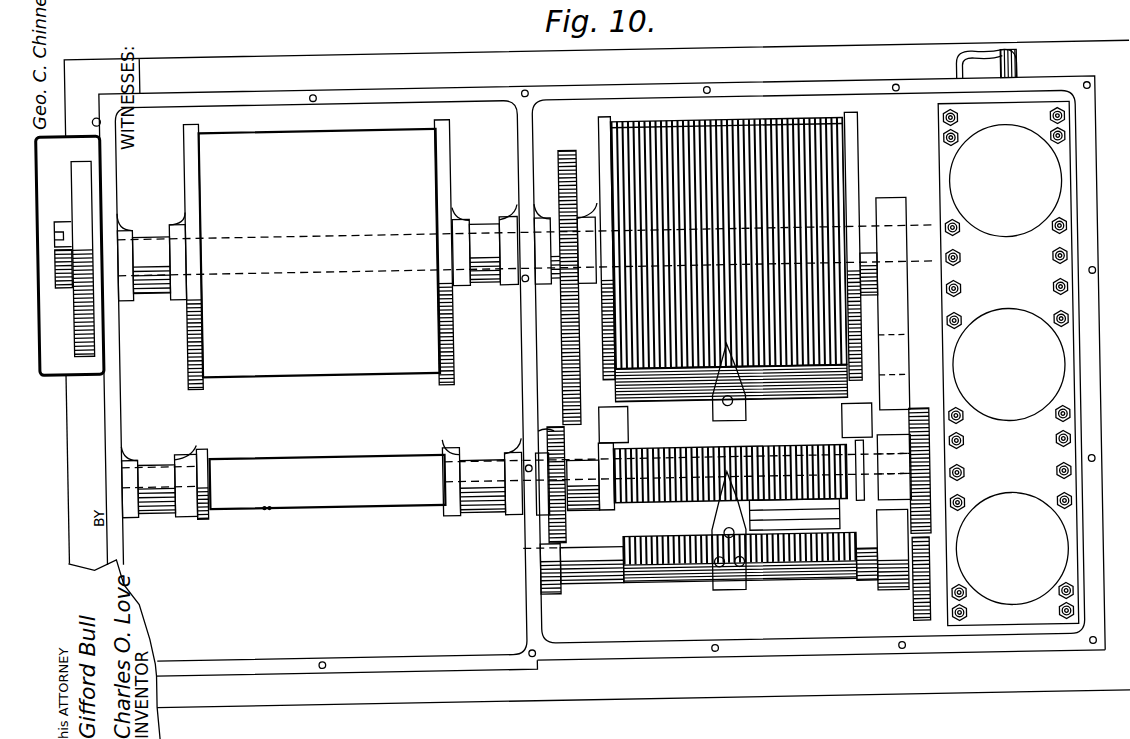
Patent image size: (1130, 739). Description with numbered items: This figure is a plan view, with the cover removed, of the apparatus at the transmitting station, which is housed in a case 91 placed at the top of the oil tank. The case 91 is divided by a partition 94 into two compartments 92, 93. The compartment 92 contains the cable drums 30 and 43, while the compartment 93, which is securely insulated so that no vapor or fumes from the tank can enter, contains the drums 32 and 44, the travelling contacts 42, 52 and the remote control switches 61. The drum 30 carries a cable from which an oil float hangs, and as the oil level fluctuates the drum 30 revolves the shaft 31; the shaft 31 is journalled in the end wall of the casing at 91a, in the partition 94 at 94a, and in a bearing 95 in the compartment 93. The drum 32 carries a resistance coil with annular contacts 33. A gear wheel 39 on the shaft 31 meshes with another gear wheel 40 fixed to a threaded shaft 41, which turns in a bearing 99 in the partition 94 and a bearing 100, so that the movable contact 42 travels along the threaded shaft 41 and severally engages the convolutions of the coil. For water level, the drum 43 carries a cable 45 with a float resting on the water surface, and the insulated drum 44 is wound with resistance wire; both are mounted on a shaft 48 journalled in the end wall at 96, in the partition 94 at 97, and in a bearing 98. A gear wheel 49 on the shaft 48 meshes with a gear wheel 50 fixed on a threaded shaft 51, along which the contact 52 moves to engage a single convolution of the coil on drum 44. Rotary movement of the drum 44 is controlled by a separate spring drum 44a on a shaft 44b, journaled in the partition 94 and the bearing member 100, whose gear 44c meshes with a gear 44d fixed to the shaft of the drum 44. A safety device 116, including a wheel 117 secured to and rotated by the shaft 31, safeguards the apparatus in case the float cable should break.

The drum 30 is at (374, 366).
The shaft 31 is at (256, 371).
The coil 32 is at (765, 123).
The annular contacts 33 is at (616, 122).
The gear wheel 39 is at (577, 152).
The gear wheel 40 is at (604, 425).
The threaded shaft 41 is at (666, 401).
The movable contact 42 is at (740, 396).
The drum 43 is at (374, 501).
The drum 44 is at (790, 512).
The drum 44a is at (758, 578).
The shaft 44b is at (545, 514).
The gear 44c is at (586, 499).
The gear 44d is at (539, 427).
The cable 45 is at (263, 506).
The shaft 48 is at (172, 502).
The gear wheel 49 is at (919, 416).
The gear wheel 50 is at (908, 610).
The threaded shaft 51 is at (804, 594).
The contact 52 is at (715, 520).
The remote control switches 61 is at (1016, 243).
The case 91 is at (445, 85).
The end wall bearing 91a is at (132, 274).
The compartment 92 is at (381, 661).
The compartment 93 is at (888, 637).
The partition 94 is at (519, 153).
The partition bearing 94a is at (511, 220).
The bearing 95 is at (893, 212).
The end wall bearing 96 is at (134, 512).
The partition bearing 97 is at (498, 498).
The bearing 98 is at (903, 471).
The bearing 99 is at (536, 581).
The bearing 100 is at (897, 562).
The safety device 116 is at (64, 280).
The wheel 117 is at (88, 191).